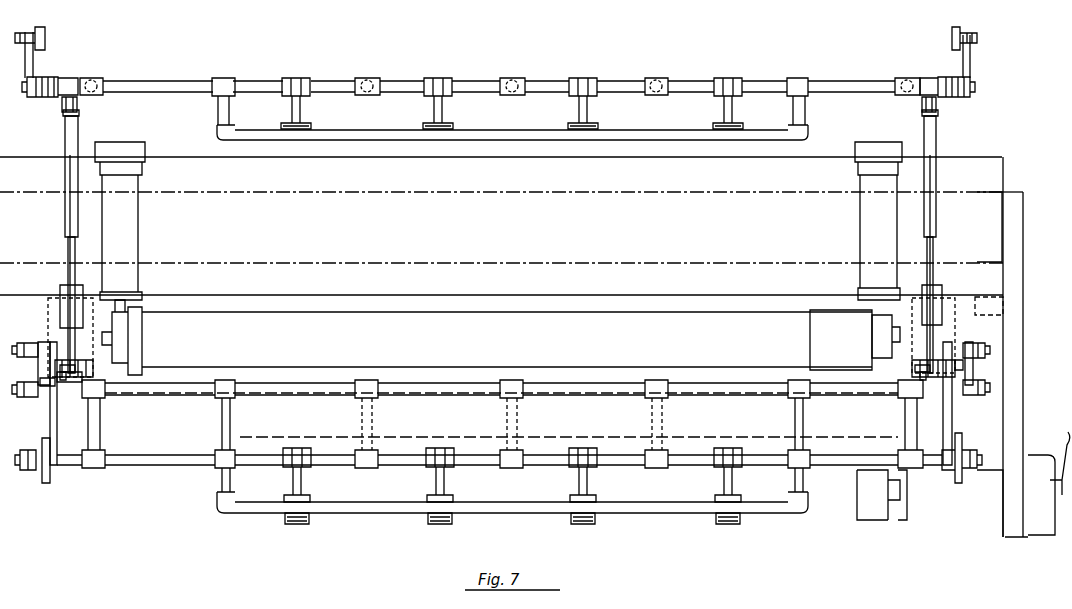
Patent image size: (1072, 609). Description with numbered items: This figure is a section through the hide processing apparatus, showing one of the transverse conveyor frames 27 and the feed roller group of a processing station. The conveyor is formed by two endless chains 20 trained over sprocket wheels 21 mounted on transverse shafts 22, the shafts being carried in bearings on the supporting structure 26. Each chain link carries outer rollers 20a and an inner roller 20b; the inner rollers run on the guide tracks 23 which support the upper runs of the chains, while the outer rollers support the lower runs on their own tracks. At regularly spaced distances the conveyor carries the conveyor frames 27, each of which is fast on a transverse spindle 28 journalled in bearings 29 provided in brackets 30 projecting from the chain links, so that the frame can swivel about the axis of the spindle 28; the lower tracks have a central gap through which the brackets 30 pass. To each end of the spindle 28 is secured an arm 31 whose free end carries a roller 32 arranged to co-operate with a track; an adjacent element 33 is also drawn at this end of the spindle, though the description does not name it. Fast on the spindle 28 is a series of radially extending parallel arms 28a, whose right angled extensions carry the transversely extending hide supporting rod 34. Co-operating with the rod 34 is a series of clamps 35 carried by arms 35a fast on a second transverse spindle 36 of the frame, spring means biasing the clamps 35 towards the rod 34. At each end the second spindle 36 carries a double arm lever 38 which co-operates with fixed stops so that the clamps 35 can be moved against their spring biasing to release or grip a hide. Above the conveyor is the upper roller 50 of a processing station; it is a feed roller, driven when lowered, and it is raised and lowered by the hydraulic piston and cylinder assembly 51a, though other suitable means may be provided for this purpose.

The endless chains 20 is at (85, 366).
The outer rollers 20a is at (920, 362).
The inner roller 20b is at (62, 106).
The sprocket wheels 21 is at (66, 243).
The transverse shafts 22 is at (985, 302).
The guide tracks 23 is at (66, 120).
The supporting structure 26 is at (1013, 398).
The conveyor frames 27 is at (232, 414).
The transverse spindle 28 is at (188, 86).
The radially extending parallel arms 28a is at (220, 428).
The bearings 29 is at (76, 384).
The brackets 30 is at (79, 104).
The arm 31 is at (1036, 380).
The roller 32 is at (42, 344).
The nut 33 is at (45, 381).
The hide supporting rod 34 is at (355, 504).
The clamps 35 is at (296, 522).
The arms 35a is at (442, 476).
The second transverse spindle 36 is at (140, 456).
The double arm lever 38 is at (44, 470).
The upper roller 50 is at (740, 318).
The hydraulic piston and cylinder assembly 51a is at (142, 211).